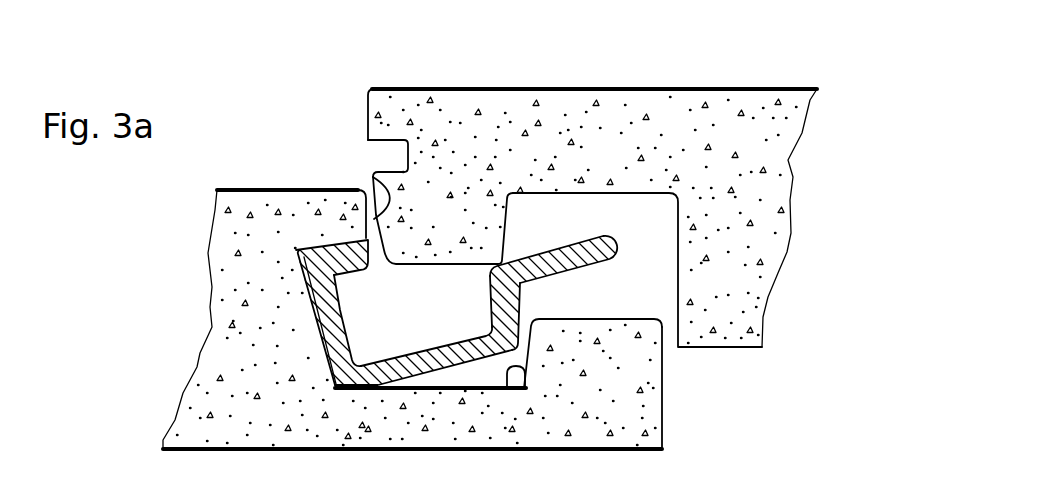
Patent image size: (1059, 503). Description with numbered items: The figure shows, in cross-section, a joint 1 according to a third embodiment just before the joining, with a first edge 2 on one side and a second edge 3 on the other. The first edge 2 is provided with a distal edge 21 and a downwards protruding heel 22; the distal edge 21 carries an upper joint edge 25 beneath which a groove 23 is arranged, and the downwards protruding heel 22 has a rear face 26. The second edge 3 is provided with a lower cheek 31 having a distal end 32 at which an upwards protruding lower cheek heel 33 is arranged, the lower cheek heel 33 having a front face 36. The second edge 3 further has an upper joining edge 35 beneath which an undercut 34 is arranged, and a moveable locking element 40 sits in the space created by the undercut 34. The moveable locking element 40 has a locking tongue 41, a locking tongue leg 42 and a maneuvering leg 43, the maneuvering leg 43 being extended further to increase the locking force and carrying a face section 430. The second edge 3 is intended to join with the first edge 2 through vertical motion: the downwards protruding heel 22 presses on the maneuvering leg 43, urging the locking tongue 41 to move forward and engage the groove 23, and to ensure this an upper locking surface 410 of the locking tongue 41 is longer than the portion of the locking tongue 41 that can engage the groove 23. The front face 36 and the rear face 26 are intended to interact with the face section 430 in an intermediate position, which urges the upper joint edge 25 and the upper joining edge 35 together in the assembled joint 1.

The joint 1 is at (378, 27).
The first edge 2 is at (492, 107).
The second edge 3 is at (235, 203).
The distal edge 21 is at (368, 80).
The downwards protruding heel 22 is at (448, 228).
The groove 23 is at (380, 153).
The upper joint edge 25 is at (359, 108).
The rear face 26 is at (520, 217).
The lower cheek 31 is at (521, 388).
The distal end 32 is at (674, 425).
The lower cheek heel 33 is at (597, 360).
The undercut 34 is at (353, 305).
The upper joining edge 35 is at (367, 177).
The front face 36 is at (520, 389).
The moveable locking element 40 is at (340, 387).
The locking tongue 41 is at (298, 246).
The locking tongue leg 42 is at (300, 341).
The maneuvering leg 43 is at (435, 363).
The upper locking surface 410 is at (426, 415).
The face section 430 is at (503, 306).